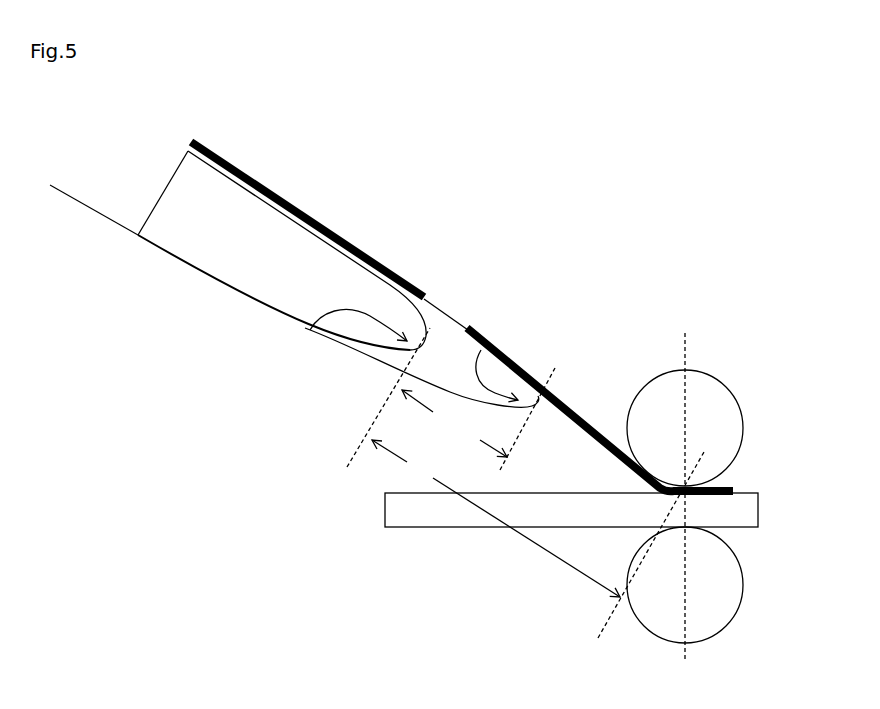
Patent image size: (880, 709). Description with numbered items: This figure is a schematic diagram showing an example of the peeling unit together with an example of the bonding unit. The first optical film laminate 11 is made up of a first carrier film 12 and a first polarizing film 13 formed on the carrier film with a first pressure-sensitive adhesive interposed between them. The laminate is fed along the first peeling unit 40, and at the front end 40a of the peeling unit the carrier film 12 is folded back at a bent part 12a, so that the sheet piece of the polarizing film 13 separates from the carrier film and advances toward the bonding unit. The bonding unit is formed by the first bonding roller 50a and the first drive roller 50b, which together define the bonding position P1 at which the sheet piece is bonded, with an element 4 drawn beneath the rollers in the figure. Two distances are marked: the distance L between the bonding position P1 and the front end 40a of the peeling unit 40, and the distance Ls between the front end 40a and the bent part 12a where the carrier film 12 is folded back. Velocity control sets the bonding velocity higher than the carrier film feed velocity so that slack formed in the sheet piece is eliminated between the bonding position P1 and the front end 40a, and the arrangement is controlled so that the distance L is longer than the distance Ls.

The first peeling unit 40 is at (238, 278).
The front end of the first peeling unit 40a is at (317, 323).
The first optical film laminate 11 is at (368, 143).
The first carrier film 12 is at (365, 380).
The bent part 12a is at (490, 343).
The first polarizing film 13 is at (573, 407).
The first bonding roller 50a is at (732, 392).
The first drive roller 50b is at (712, 624).
The bonding position P1 is at (700, 476).
The plate 4 is at (408, 515).
The distance between the bonding position and the front end of the peeling unit L is at (496, 518).
The distance between the front end of the peeling unit and the bent part Ls is at (454, 423).